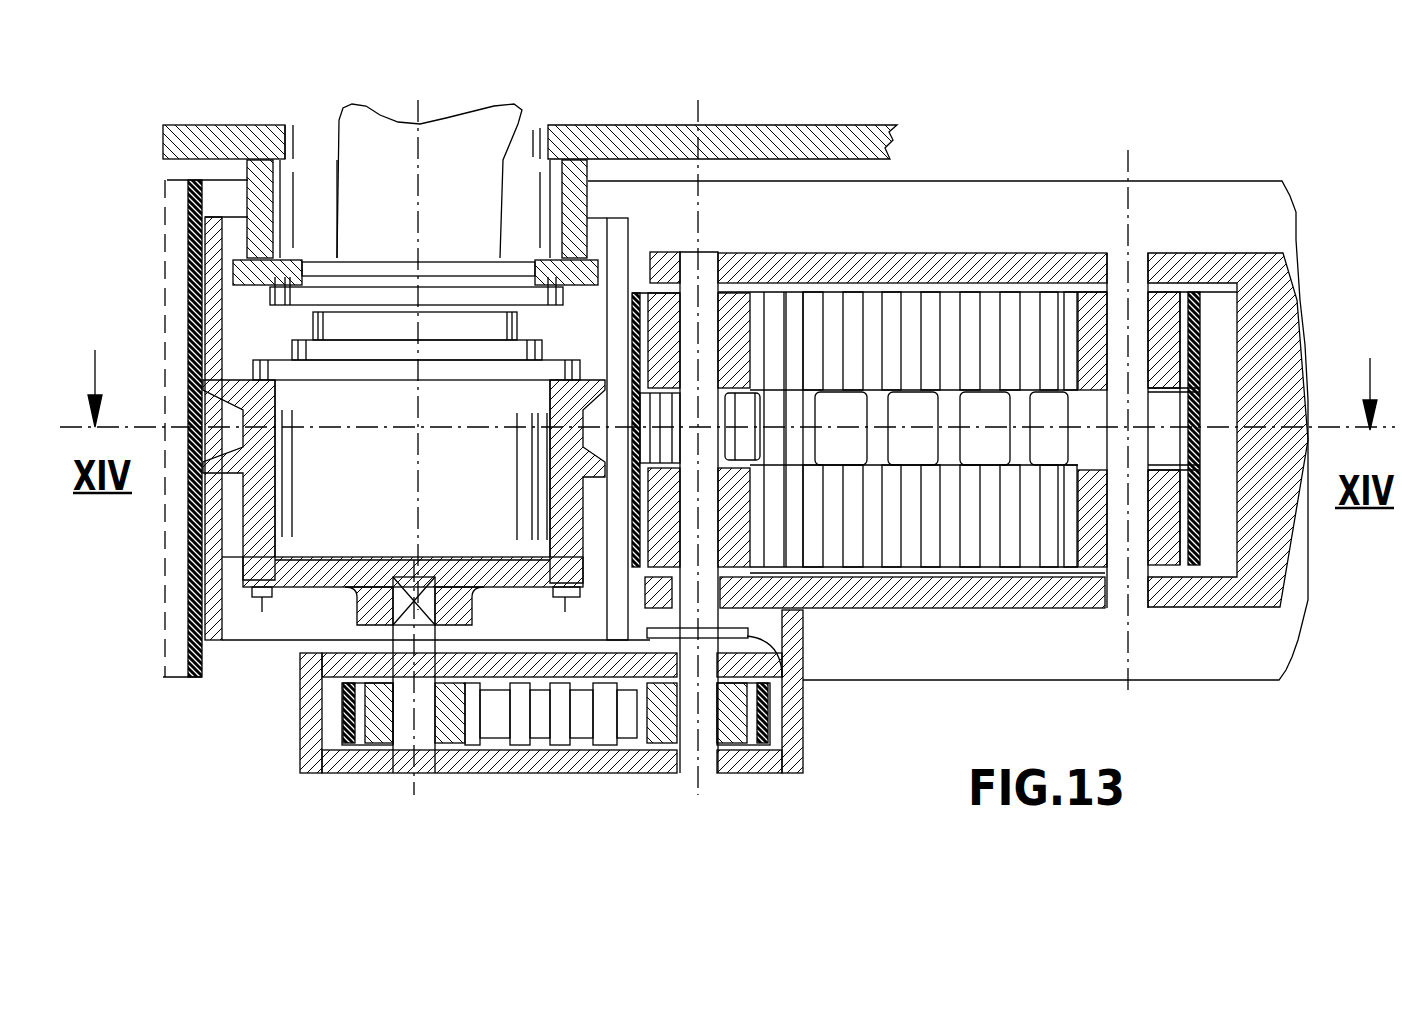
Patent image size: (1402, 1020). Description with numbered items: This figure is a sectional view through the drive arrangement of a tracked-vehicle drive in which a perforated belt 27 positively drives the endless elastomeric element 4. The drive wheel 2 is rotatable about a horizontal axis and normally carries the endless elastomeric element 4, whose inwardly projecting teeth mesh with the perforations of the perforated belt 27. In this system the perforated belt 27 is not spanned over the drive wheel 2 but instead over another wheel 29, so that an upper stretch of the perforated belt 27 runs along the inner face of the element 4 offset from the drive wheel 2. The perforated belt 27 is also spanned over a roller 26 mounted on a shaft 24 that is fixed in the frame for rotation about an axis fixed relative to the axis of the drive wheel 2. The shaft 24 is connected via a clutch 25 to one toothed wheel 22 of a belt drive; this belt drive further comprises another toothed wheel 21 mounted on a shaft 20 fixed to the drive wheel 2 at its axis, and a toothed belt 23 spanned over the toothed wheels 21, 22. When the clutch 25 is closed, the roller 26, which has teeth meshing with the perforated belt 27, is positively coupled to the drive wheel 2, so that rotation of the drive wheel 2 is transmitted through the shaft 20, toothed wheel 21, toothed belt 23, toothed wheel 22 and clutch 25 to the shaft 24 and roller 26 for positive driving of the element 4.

The drive wheel 2 is at (253, 563).
The endless elastomeric element 4 is at (185, 557).
The shaft 20 is at (407, 737).
The toothed wheel 21 is at (347, 708).
The toothed wheel 22 is at (737, 720).
The toothed belt 23 is at (518, 723).
The shaft 24 is at (692, 250).
The clutch 25 is at (803, 700).
The roller 26 is at (735, 320).
The perforated belt 27 is at (890, 320).
The wheel 29 is at (1170, 335).